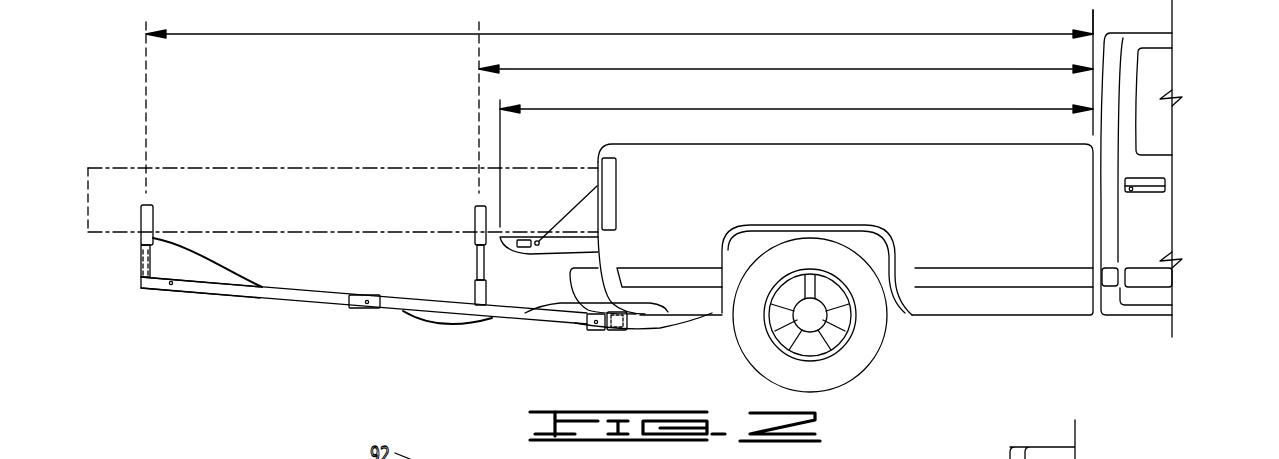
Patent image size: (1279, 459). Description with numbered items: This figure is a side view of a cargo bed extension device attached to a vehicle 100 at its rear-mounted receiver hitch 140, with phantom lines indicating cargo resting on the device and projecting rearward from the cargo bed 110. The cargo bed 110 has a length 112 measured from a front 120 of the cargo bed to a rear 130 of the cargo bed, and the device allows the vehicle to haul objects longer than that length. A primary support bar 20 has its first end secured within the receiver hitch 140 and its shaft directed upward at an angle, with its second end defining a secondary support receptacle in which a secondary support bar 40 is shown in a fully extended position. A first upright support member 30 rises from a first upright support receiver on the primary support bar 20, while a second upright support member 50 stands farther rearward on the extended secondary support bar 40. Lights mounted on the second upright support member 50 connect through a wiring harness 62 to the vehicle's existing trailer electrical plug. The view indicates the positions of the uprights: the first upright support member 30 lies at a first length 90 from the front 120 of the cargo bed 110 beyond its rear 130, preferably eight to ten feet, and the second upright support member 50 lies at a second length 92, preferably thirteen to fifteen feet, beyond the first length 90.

The primary support bar 20 is at (560, 322).
The first upright support member 30 is at (476, 263).
The secondary support bar 40 is at (205, 290).
The second upright support member 50 is at (153, 209).
The wiring harness 62 is at (216, 265).
The first length 90 is at (862, 70).
The second length 92 is at (395, 29).
The vehicle 100 is at (1150, 225).
The cargo bed 110 is at (942, 212).
The length of the cargo bed 112 is at (737, 118).
The front of the cargo bed 120 is at (1093, 30).
The rear of the cargo bed 130 is at (496, 148).
The receiver hitch 140 is at (615, 333).